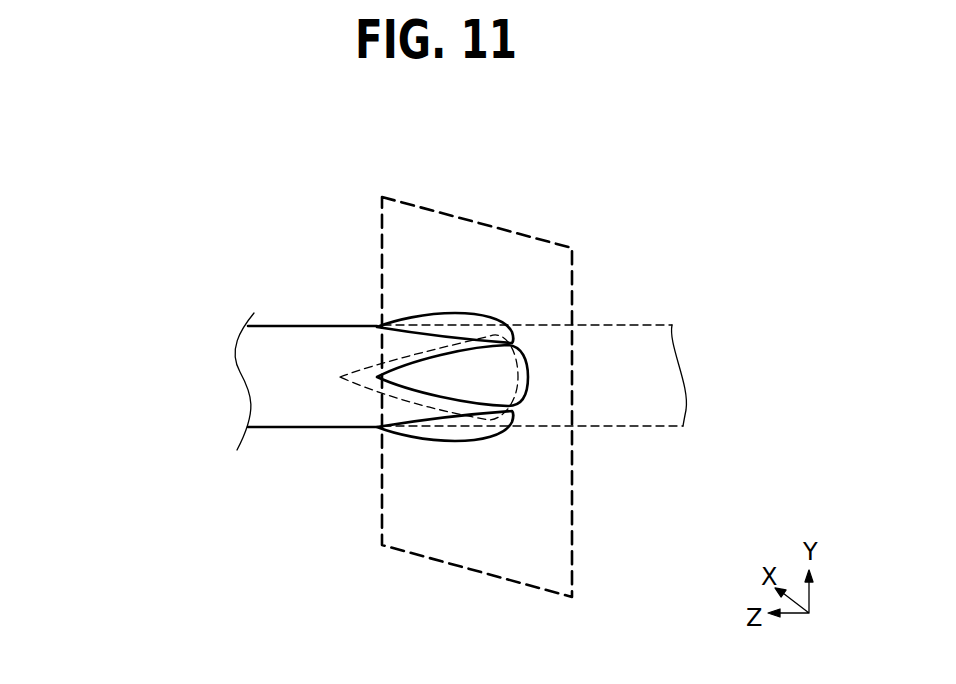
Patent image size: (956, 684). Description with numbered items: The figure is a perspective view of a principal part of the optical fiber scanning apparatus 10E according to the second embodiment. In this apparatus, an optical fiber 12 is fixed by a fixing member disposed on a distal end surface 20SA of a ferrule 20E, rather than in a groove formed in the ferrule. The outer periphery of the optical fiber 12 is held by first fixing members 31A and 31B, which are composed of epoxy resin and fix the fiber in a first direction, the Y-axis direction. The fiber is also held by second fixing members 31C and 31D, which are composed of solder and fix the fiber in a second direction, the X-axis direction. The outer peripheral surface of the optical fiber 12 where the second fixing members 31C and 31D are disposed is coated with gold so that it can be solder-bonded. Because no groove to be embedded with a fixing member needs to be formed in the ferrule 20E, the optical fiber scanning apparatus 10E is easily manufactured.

The optical fiber scanning apparatus 10E is at (229, 241).
The optical fiber 12 is at (297, 325).
The ferrule 20E is at (462, 220).
The distal end surface 20SA is at (448, 534).
The first fixing member 31A is at (433, 313).
The first fixing member 31B is at (440, 438).
The second fixing member 31C is at (528, 376).
The second fixing member 31D is at (360, 393).